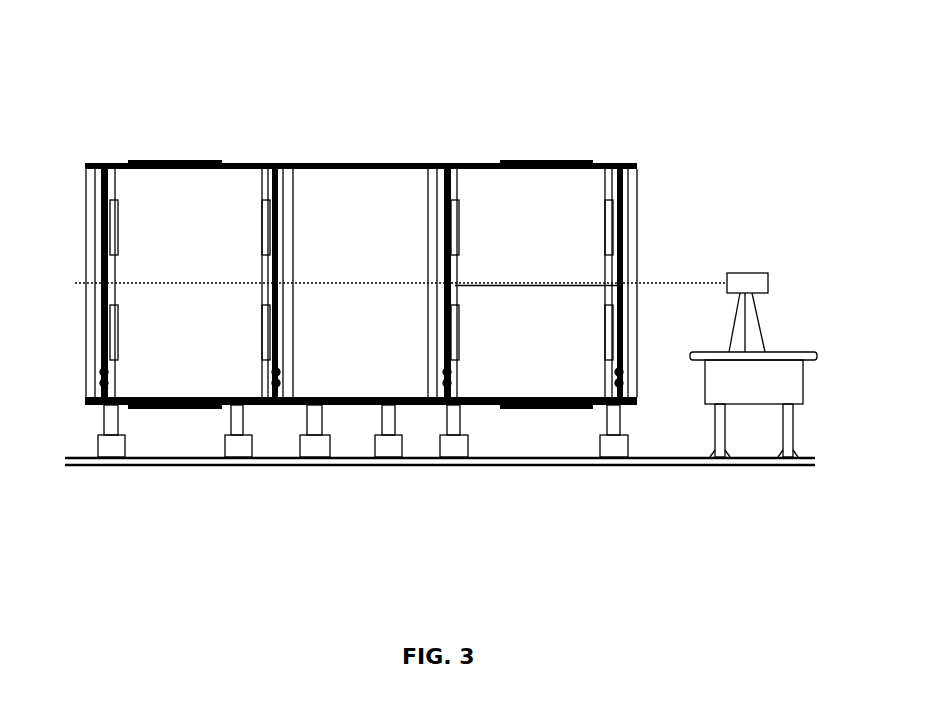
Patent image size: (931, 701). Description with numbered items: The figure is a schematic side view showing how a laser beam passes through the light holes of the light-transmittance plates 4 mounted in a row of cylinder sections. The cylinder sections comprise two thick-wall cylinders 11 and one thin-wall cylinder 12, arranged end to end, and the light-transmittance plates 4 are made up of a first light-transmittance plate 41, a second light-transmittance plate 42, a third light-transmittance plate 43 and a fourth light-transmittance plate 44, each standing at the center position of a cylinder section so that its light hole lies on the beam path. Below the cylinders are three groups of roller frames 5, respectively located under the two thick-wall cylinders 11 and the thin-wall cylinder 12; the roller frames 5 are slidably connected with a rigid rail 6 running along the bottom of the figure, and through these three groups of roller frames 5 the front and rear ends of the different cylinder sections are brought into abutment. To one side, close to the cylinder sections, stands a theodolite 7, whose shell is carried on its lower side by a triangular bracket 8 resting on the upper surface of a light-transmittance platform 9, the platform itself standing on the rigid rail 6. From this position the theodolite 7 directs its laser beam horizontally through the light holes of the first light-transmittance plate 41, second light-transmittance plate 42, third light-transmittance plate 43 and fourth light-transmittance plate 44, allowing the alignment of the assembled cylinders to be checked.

The light-transmittance plate 4 is at (598, 95).
The first light-transmittance plate 41 is at (605, 253).
The second light-transmittance plate 42 is at (434, 253).
The third light-transmittance plate 43 is at (261, 253).
The fourth light-transmittance plate 44 is at (92, 253).
The thin-wall cylinder 12 is at (362, 162).
The roller frame 5 is at (107, 420).
The thick-wall cylinder 11 is at (426, 474).
The rigid rail 6 is at (760, 466).
The theodolite 7 is at (770, 282).
The triangular bracket 8 is at (762, 318).
The light-transmittance platform 9 is at (778, 382).